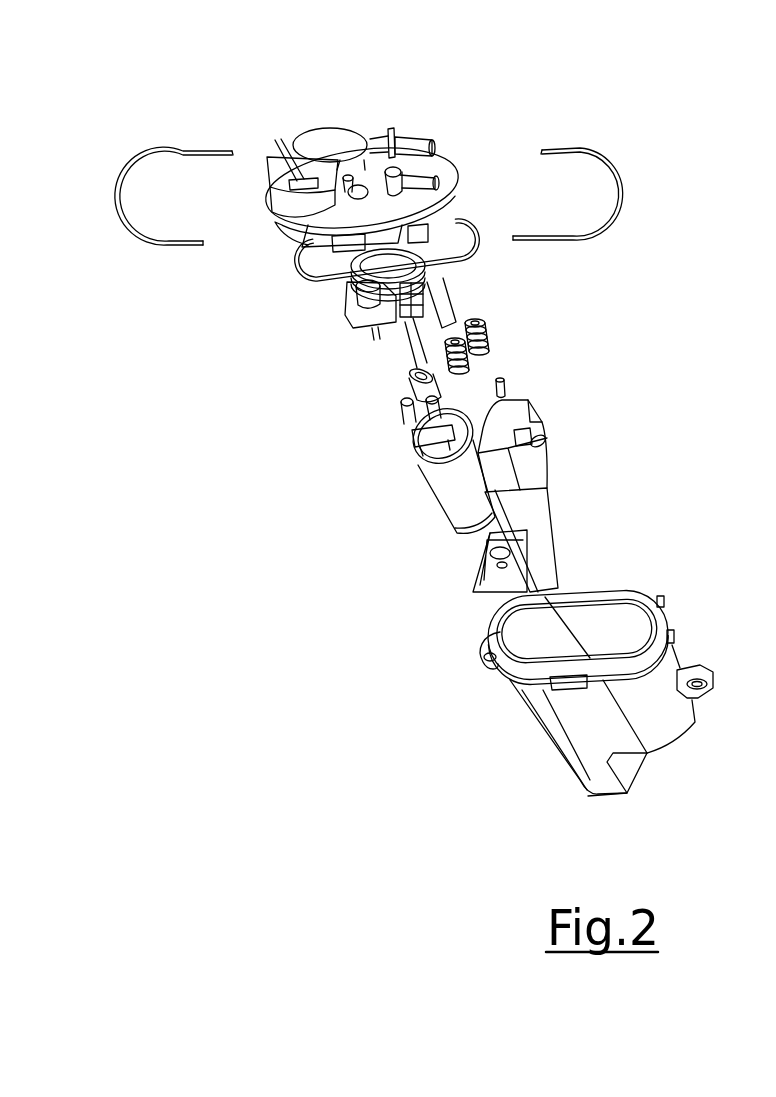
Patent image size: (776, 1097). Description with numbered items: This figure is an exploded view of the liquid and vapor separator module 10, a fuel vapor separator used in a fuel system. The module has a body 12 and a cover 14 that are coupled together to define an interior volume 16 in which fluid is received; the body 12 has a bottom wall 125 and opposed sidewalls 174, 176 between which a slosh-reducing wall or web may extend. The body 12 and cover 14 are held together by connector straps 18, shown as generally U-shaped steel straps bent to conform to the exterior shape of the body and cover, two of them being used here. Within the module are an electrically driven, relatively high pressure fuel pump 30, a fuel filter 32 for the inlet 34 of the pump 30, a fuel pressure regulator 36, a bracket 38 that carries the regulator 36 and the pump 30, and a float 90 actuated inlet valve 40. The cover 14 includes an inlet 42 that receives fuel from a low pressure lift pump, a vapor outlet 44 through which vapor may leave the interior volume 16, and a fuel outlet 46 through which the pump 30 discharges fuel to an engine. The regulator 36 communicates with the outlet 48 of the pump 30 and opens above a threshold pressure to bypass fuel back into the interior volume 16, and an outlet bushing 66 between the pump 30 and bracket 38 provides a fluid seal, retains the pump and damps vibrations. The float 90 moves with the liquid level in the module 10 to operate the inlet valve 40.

The liquid and vapor separator module 10 is at (571, 101).
The body 12 is at (673, 722).
The cover 14 is at (459, 186).
The interior volume 16 is at (608, 630).
The connector strap 18 is at (178, 151).
The fuel pump 30 is at (440, 517).
The fuel filter 32 is at (542, 542).
The inlet of the pump 34 is at (474, 530).
The fuel pressure regulator 36 is at (453, 327).
The bracket 38 is at (408, 347).
The inlet valve 40 is at (556, 412).
The inlet 42 is at (415, 178).
The vapor outlet 44 is at (356, 182).
The fuel outlet 46 is at (412, 145).
The outlet of the fuel pump 48 is at (448, 420).
The outlet bushing 66 is at (405, 372).
The float 90 is at (532, 398).
The bottom wall 125 is at (600, 795).
The sidewall 174 is at (567, 710).
The sidewall 176 is at (605, 610).